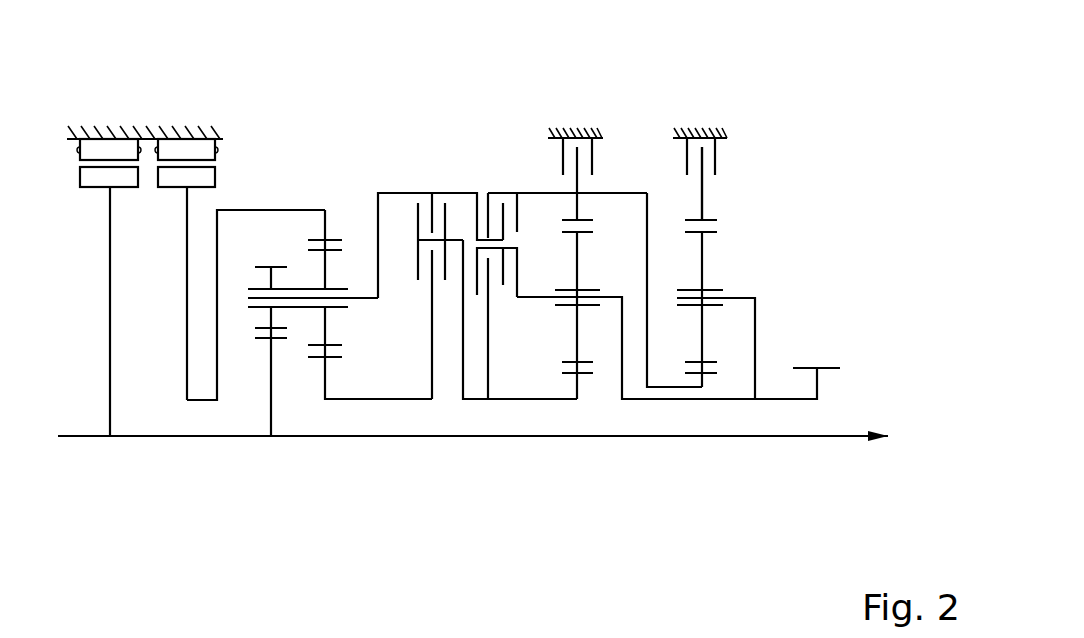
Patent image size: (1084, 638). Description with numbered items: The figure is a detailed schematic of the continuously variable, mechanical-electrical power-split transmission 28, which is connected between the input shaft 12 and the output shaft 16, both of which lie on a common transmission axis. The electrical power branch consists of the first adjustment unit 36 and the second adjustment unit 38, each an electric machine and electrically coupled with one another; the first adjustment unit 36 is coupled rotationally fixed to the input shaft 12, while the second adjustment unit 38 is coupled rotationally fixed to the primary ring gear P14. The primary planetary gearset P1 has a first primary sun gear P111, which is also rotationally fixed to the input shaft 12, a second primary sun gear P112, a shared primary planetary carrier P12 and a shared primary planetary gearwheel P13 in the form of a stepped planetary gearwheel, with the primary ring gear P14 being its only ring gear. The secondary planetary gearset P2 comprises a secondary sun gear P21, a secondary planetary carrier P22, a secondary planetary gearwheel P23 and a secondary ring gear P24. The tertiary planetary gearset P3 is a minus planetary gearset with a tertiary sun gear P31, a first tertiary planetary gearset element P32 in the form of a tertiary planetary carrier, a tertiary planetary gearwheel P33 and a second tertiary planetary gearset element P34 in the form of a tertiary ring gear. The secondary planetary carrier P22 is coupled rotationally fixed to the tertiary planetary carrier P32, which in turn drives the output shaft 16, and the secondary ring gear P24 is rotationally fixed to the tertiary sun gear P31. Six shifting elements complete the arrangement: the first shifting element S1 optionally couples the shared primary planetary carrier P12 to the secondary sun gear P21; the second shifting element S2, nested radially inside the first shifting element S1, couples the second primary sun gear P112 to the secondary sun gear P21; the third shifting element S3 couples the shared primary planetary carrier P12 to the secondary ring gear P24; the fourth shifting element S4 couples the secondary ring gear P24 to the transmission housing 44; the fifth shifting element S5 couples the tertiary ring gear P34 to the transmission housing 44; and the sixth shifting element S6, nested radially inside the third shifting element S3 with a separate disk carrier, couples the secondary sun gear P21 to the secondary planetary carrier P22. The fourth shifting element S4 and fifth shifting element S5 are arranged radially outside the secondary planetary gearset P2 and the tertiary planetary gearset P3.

The input shaft 12 is at (75, 440).
The output shaft 16 is at (807, 368).
The power-split transmission 28 is at (805, 108).
The first adjustment unit 36 is at (105, 110).
The second adjustment unit 38 is at (183, 110).
The transmission housing 44 is at (565, 128).
The primary planetary gearset P1 is at (300, 447).
The first primary sun gear P111 is at (270, 403).
The second primary sun gear P112 is at (325, 388).
The shared primary planetary carrier P12 is at (362, 297).
The shared primary planetary gearwheel P13 is at (297, 289).
The primary ring gear P14 is at (243, 208).
The secondary planetary gearset P2 is at (578, 447).
The secondary sun gear P21 is at (577, 388).
The secondary planetary carrier P22 is at (608, 302).
The secondary planetary gearwheel P23 is at (577, 333).
The secondary ring gear P24 is at (577, 183).
The tertiary planetary gearset P3 is at (702, 447).
The tertiary sun gear P31 is at (673, 387).
The first tertiary planetary gearset element P32 is at (743, 295).
The tertiary planetary gearwheel P33 is at (703, 248).
The second tertiary planetary gearset element P34 is at (703, 188).
The first shifting element S1 is at (431, 190).
The second shifting element S2 is at (420, 285).
The third shifting element S3 is at (500, 190).
The fourth shifting element S4 is at (598, 155).
The fifth shifting element S5 is at (722, 155).
The sixth shifting element S6 is at (482, 293).